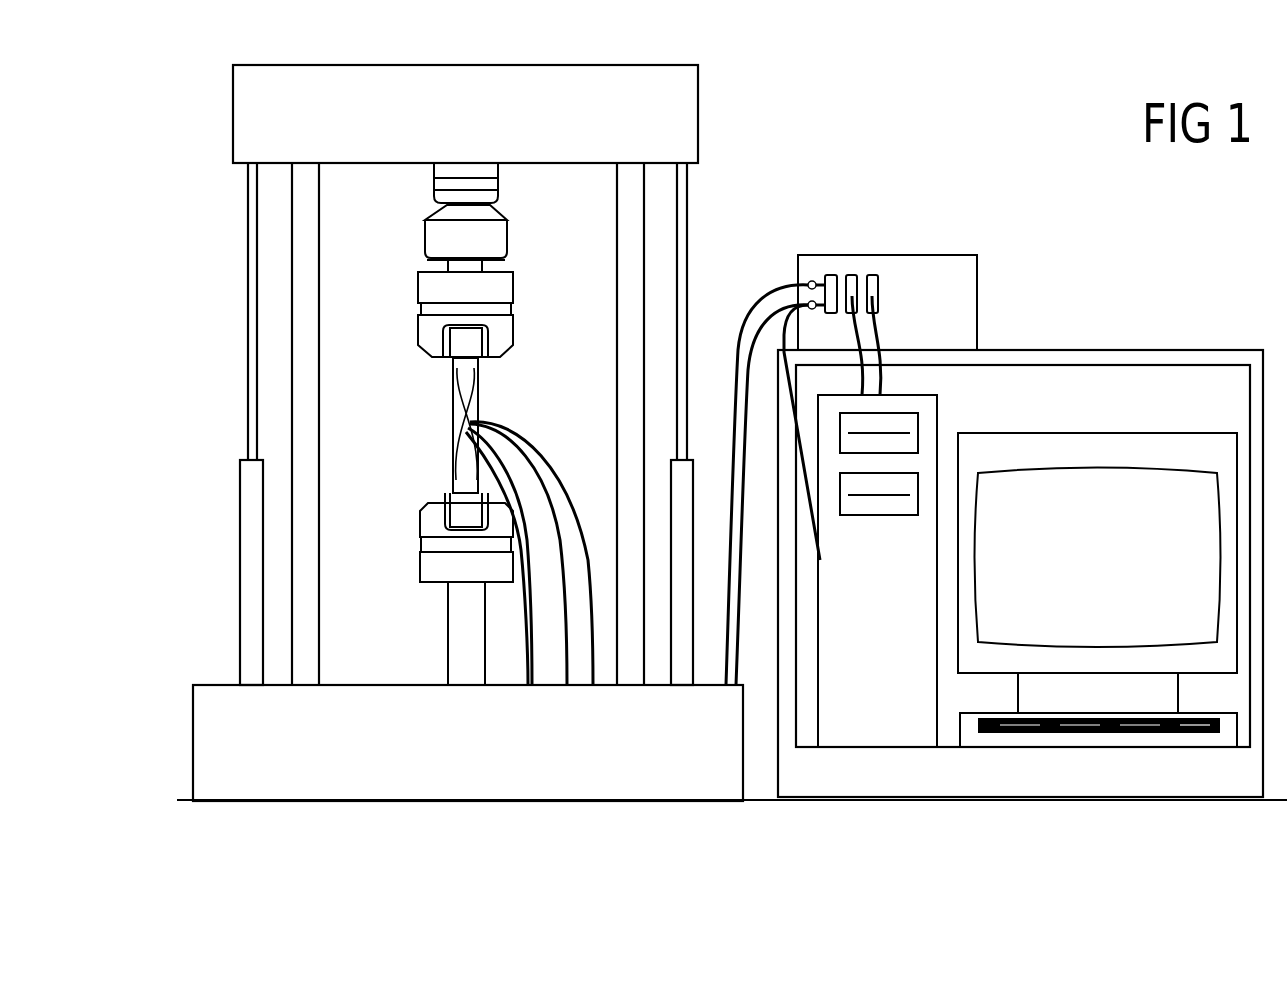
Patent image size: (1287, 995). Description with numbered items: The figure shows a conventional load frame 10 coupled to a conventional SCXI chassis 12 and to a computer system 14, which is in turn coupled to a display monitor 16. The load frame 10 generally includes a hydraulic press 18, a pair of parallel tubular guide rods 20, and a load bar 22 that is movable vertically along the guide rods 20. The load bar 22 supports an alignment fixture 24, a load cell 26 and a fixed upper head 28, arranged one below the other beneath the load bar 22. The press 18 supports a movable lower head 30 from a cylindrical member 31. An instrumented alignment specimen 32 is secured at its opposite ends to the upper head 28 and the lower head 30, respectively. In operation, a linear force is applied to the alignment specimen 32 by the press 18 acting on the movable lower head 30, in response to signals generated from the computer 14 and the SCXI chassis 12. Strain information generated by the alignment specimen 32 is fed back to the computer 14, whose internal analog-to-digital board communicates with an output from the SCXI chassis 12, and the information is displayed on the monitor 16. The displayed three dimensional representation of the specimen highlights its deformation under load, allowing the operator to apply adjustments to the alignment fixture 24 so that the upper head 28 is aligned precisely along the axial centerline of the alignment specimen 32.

The load frame 10 is at (937, 150).
The SCXI chassis 12 is at (962, 277).
The computer system 14 is at (930, 440).
The display monitor 16 is at (1107, 445).
The hydraulic press 18 is at (217, 683).
The guide rods 20 is at (305, 228).
The load bar 22 is at (675, 112).
The alignment fixture 24 is at (487, 182).
The load cell 26 is at (488, 237).
The fixed upper head 28 is at (437, 292).
The movable lower head 30 is at (428, 562).
The cylindrical member 31 is at (458, 645).
The instrumented alignment specimen 32 is at (460, 422).